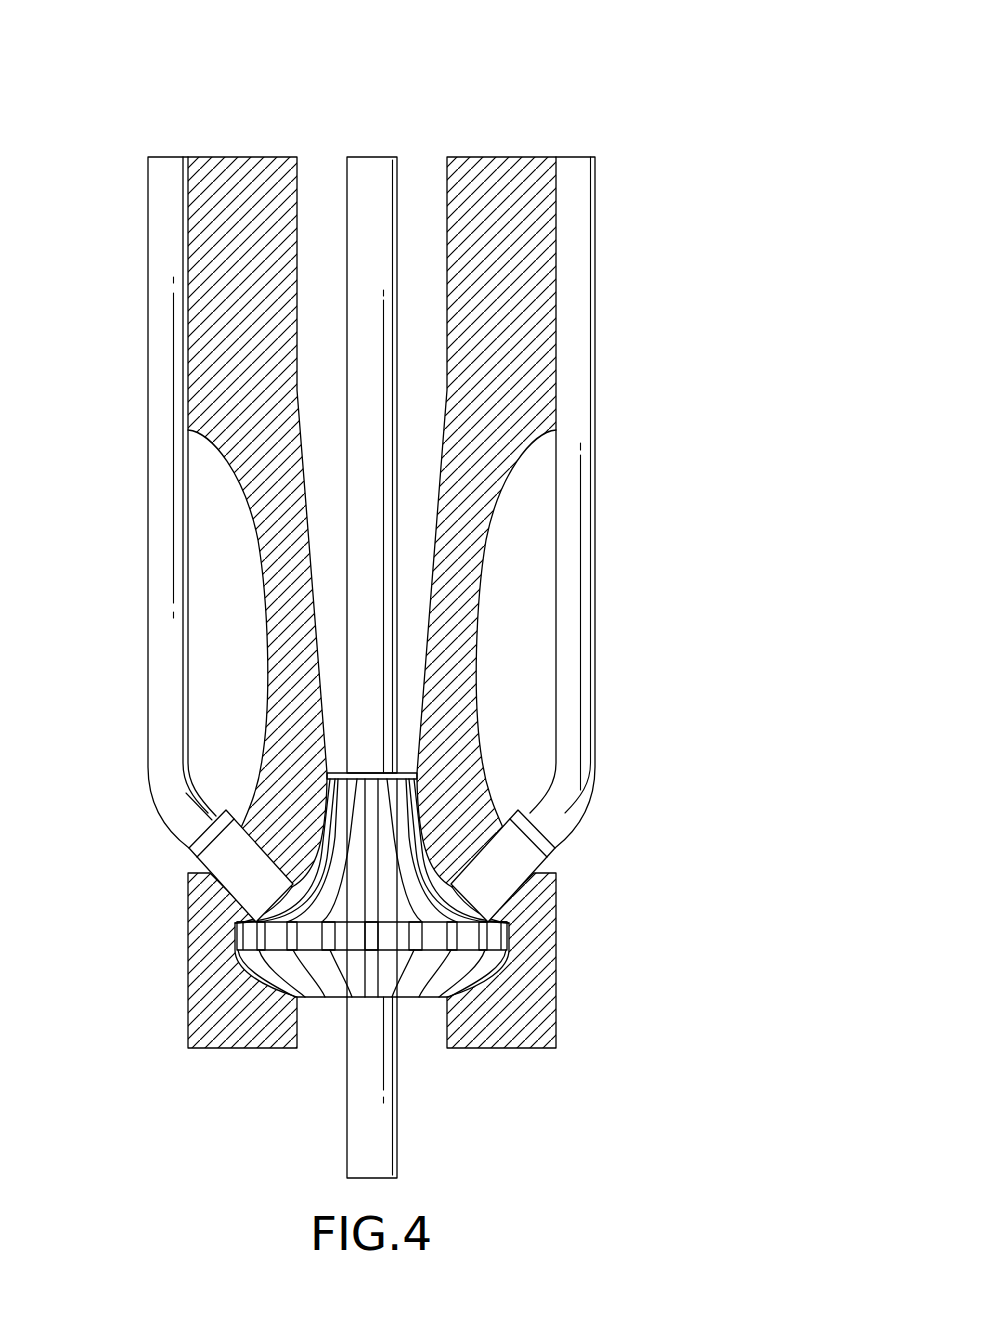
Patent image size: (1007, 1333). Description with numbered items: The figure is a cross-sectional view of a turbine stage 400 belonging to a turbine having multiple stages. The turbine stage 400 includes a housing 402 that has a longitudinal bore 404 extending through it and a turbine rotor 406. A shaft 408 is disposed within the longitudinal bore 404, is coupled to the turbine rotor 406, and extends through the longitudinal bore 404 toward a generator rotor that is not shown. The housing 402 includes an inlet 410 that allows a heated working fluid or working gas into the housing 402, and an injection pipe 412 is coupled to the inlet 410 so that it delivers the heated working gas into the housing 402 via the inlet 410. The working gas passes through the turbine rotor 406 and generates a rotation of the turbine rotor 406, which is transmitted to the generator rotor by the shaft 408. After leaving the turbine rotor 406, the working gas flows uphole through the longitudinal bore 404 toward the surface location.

The turbine stage 400 is at (603, 97).
The housing 402 is at (513, 325).
The longitudinal bore 404 is at (306, 326).
The turbine rotor 406 is at (345, 501).
The shaft 408 is at (323, 950).
The inlet 410 is at (228, 855).
The injection pipe 412 is at (165, 665).